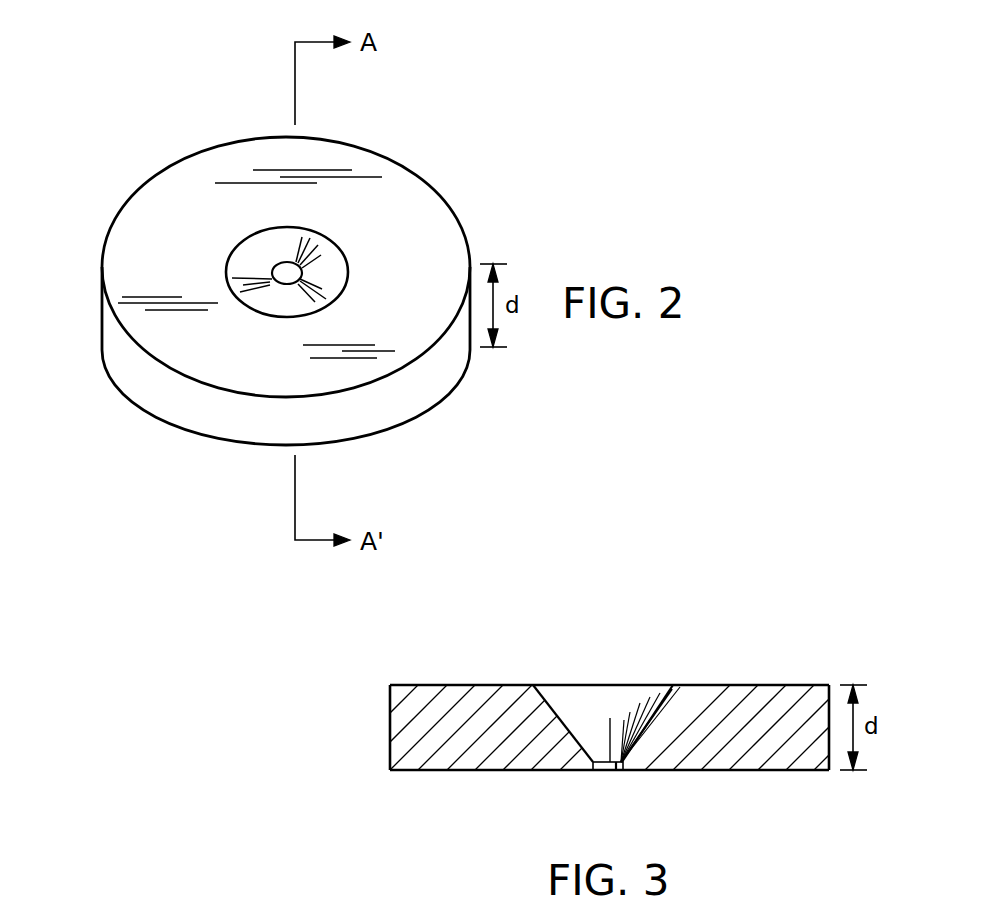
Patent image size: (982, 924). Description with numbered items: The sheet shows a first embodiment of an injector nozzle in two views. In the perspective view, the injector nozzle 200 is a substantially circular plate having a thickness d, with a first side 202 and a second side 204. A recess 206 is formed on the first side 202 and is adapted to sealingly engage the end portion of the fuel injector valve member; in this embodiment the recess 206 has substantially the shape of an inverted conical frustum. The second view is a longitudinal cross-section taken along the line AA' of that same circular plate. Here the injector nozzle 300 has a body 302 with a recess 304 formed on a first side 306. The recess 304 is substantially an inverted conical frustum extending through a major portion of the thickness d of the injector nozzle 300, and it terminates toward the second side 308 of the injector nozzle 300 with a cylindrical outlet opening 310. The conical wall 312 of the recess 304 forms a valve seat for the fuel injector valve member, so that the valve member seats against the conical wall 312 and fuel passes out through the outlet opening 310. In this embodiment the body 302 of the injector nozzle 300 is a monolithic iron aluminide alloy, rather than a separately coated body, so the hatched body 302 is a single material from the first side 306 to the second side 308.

In FIG. 2, the injector nozzle 200 is at (312, 245).
In FIG. 2, the first side 202 is at (433, 223).
In FIG. 2, the second side 204 is at (390, 448).
In FIG. 2, the recess 206 is at (252, 257).
In FIG. 3, the injector nozzle 300 is at (588, 681).
In FIG. 3, the body 302 is at (400, 724).
In FIG. 3, the recess 304 is at (620, 702).
In FIG. 3, the first side 306 is at (753, 685).
In FIG. 3, the second side 308 is at (718, 772).
In FIG. 3, the cylindrical outlet opening 310 is at (600, 772).
In FIG. 3, the conical wall 312 is at (548, 698).